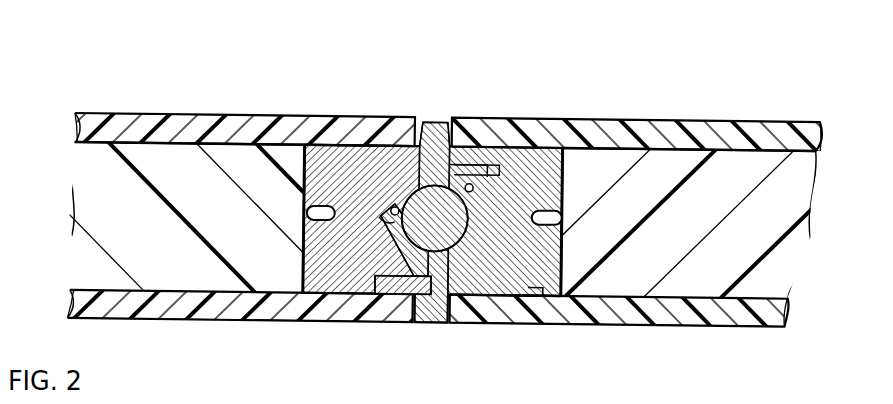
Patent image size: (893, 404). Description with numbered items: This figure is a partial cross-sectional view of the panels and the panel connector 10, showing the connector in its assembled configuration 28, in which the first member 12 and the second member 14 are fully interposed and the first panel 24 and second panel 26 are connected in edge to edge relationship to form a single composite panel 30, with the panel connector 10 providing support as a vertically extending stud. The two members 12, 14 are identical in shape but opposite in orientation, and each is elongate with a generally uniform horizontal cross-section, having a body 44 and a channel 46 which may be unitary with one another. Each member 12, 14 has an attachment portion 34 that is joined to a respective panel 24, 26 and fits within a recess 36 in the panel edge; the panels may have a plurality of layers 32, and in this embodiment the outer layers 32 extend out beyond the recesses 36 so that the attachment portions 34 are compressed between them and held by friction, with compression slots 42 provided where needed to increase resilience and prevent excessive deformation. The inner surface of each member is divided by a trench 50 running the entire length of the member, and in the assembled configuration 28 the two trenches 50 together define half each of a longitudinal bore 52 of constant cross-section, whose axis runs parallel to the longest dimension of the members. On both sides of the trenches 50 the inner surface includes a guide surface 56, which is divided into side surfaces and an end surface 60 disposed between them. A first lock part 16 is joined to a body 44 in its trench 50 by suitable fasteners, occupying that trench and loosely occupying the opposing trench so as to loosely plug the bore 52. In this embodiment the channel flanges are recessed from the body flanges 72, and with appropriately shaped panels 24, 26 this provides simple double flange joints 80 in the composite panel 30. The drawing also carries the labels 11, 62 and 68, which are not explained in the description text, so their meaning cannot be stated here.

The panel connector 10 is at (442, 60).
The panel structure 11 is at (203, 5).
The first member 12 is at (339, 114).
The second member 14 is at (537, 127).
The first lock part 16 is at (570, 121).
The first panel 24 is at (187, 114).
The second panel 26 is at (743, 121).
The assembled configuration 28 is at (128, 318).
The composite panel 30 is at (721, 338).
The layers 32 is at (176, 318).
The attachment portion 34 is at (289, 113).
The recesses 36 is at (327, 114).
The compression slots 42 is at (310, 297).
The body 44 is at (394, 212).
The channel 46 is at (498, 140).
The trench 50 is at (424, 184).
The longitudinal bore 52 is at (443, 127).
The guide surface 56 is at (385, 190).
The end surface 60 is at (363, 300).
The retainer block edge 62 is at (392, 300).
The seat shoulder 68 is at (490, 140).
The body flanges 72 is at (428, 322).
The double flange joints 80 is at (436, 320).